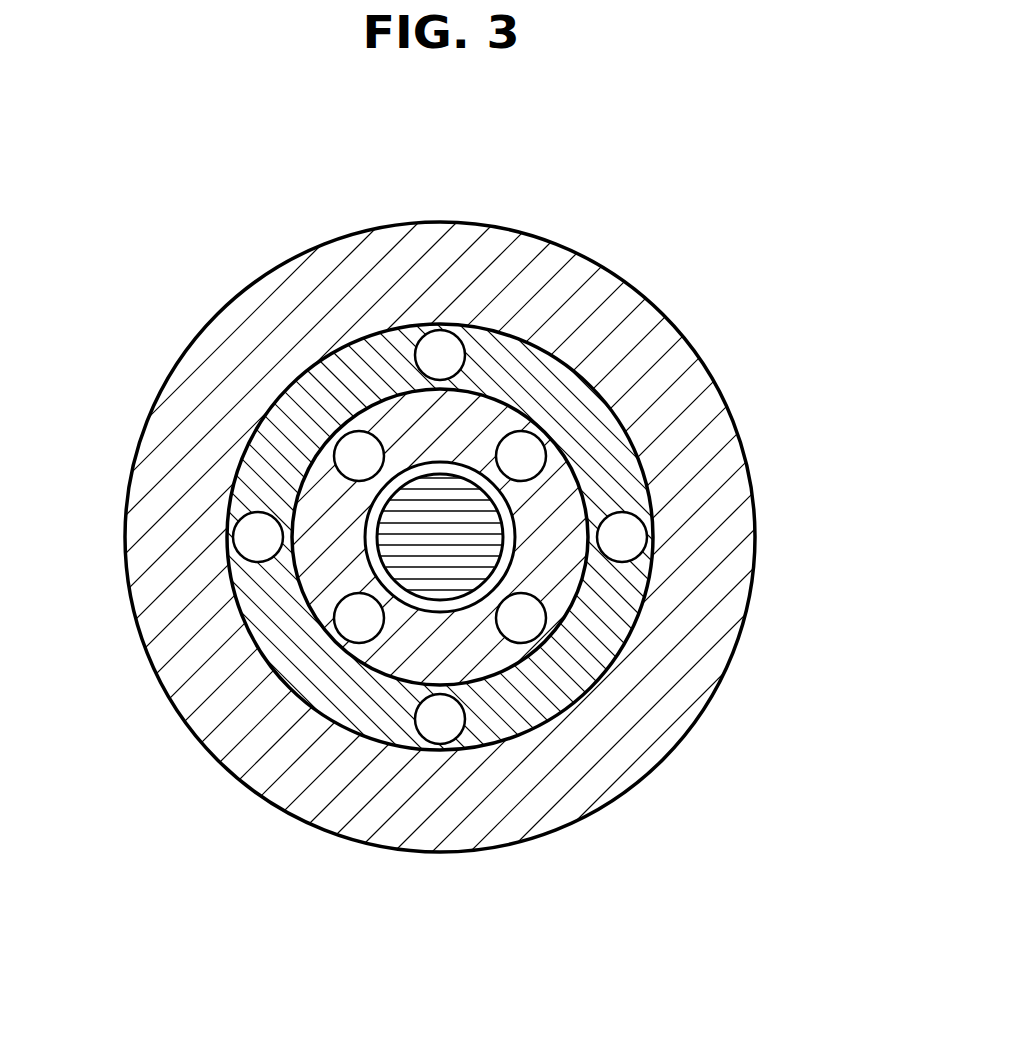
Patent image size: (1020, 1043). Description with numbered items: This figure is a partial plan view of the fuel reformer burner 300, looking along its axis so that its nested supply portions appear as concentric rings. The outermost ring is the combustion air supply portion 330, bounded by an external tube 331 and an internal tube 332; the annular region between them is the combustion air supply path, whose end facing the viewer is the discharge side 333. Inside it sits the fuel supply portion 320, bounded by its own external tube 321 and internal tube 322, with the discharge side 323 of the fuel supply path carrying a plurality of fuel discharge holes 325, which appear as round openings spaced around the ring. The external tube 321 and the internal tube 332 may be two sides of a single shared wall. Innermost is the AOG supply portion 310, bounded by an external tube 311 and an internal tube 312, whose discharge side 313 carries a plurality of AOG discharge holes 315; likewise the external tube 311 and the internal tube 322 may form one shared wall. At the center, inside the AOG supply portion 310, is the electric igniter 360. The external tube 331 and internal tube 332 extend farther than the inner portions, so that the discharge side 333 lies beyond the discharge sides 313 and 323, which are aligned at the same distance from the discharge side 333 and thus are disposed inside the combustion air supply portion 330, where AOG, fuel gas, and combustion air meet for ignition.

The fuel reformer burner 300 is at (160, 190).
The AOG supply portion 310 is at (818, 634).
The external tube 311 is at (555, 622).
The internal tube 312 is at (510, 558).
The discharge side 313 is at (403, 657).
The AOG discharge holes 315 is at (525, 630).
The fuel supply portion 320 is at (818, 299).
The external tube 321 is at (585, 378).
The internal tube 322 is at (578, 477).
The discharge side 323 is at (297, 658).
The fuel discharge holes 325 is at (647, 538).
The combustion air supply portion 330 is at (515, 160).
The external tube 331 is at (588, 253).
The internal tube 332 is at (500, 327).
The discharge side 333 is at (203, 663).
The electric igniter 360 is at (402, 520).